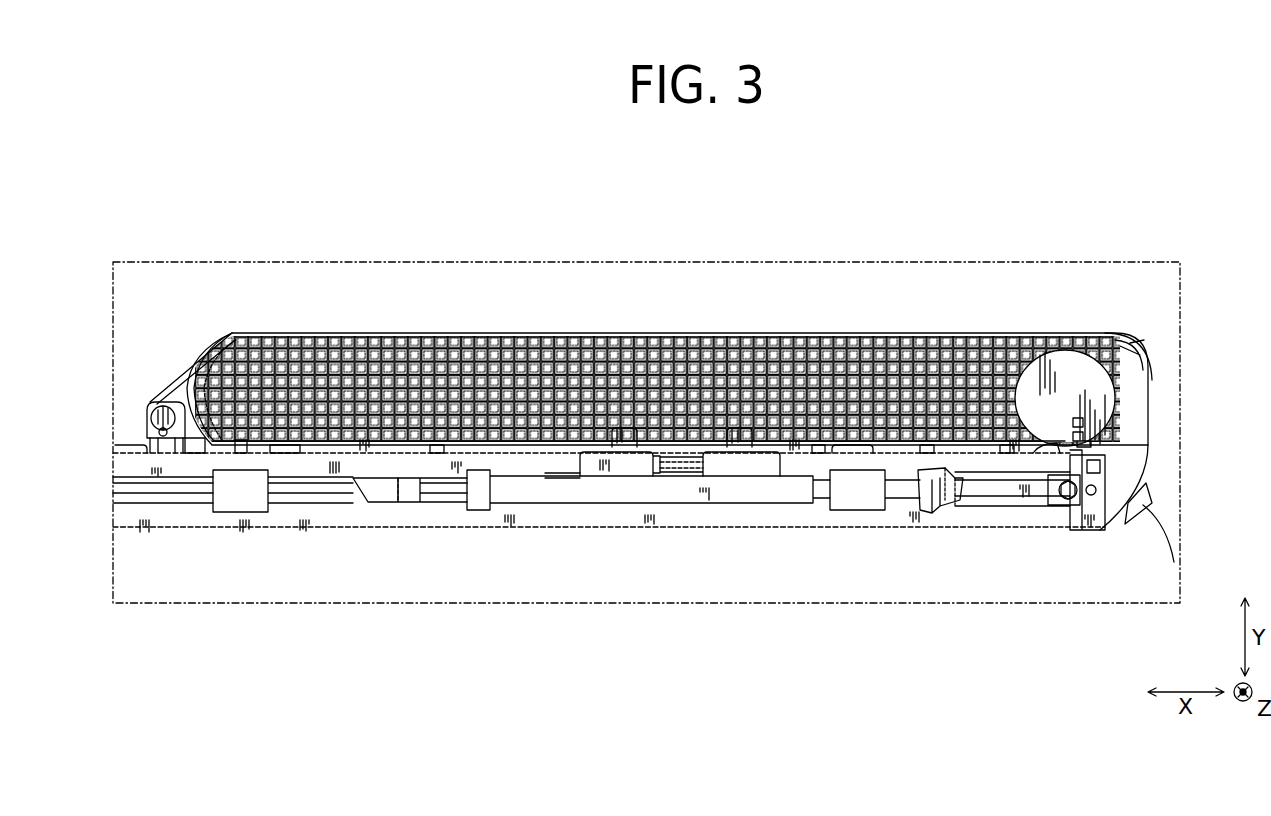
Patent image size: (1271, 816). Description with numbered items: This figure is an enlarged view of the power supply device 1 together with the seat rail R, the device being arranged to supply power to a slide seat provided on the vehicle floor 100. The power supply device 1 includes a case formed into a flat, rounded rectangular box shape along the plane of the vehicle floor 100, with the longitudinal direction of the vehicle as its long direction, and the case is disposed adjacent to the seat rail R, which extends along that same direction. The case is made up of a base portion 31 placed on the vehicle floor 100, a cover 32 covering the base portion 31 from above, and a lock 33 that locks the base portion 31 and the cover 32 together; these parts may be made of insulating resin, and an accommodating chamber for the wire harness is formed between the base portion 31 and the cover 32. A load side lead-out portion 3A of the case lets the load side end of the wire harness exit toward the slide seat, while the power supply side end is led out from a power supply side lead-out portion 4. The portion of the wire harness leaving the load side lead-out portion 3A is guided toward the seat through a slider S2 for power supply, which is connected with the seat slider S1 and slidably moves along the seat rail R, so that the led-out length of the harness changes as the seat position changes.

The power supply device 1 is at (1139, 338).
The vehicle floor 100 is at (1167, 489).
The base portion 31 is at (1255, 588).
The cover 32 is at (1148, 360).
The lock 33 is at (1199, 544).
The seat slider S1 is at (572, 490).
The slider for power supply S2 is at (953, 505).
The seat rail R is at (988, 516).
The load side lead-out portion 3A is at (1058, 505).
The power supply side lead-out portion 4 is at (1146, 500).